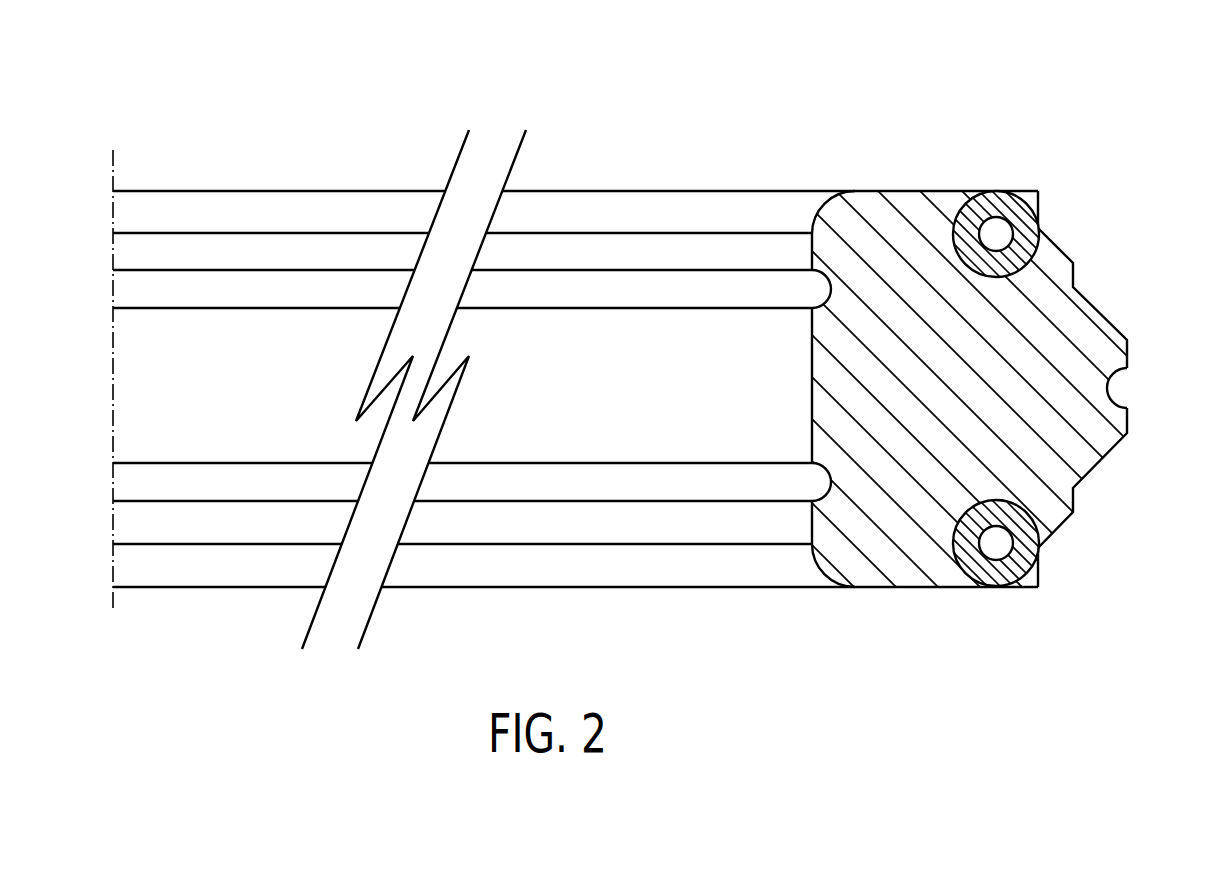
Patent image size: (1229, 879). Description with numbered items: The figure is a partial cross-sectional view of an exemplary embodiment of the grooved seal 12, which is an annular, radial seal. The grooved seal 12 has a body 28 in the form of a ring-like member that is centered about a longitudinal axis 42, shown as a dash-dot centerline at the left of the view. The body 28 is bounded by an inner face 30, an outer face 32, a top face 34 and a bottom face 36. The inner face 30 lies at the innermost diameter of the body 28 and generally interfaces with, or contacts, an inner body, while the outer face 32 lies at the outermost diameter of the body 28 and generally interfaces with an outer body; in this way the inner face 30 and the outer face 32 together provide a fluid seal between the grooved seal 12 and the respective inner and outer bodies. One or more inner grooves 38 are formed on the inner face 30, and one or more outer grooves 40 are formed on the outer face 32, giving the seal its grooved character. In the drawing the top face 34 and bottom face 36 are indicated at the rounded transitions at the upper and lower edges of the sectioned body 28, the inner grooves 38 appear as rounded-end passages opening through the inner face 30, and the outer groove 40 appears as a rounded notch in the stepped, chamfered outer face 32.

The grooved seal 12 is at (932, 98).
The body 28 is at (1020, 185).
The inner face 30 is at (812, 387).
The outer face 32 is at (1073, 282).
The top face 34 is at (866, 190).
The bottom face 36 is at (947, 588).
The inner grooves 38 is at (804, 288).
The outer grooves 40 is at (1117, 395).
The longitudinal axis 42 is at (113, 167).